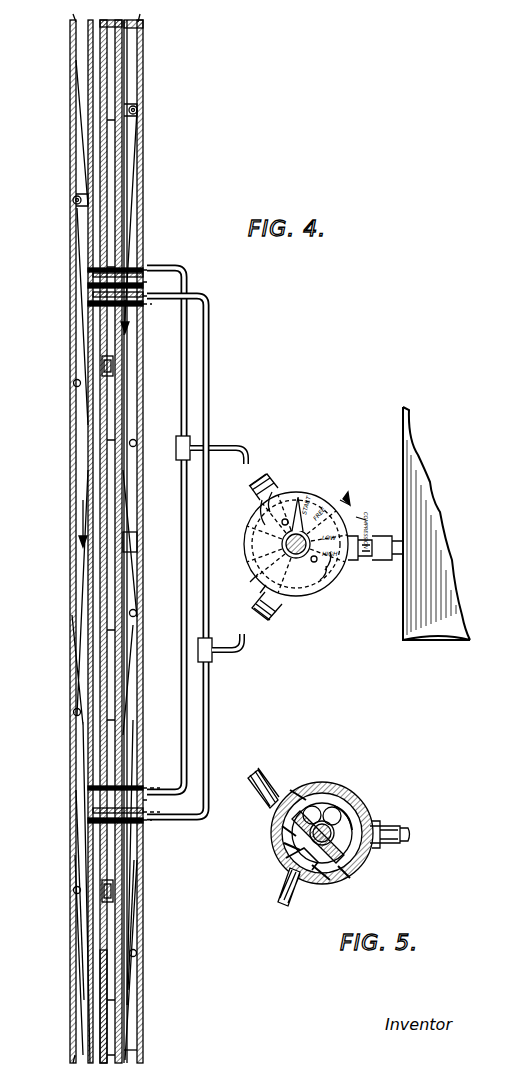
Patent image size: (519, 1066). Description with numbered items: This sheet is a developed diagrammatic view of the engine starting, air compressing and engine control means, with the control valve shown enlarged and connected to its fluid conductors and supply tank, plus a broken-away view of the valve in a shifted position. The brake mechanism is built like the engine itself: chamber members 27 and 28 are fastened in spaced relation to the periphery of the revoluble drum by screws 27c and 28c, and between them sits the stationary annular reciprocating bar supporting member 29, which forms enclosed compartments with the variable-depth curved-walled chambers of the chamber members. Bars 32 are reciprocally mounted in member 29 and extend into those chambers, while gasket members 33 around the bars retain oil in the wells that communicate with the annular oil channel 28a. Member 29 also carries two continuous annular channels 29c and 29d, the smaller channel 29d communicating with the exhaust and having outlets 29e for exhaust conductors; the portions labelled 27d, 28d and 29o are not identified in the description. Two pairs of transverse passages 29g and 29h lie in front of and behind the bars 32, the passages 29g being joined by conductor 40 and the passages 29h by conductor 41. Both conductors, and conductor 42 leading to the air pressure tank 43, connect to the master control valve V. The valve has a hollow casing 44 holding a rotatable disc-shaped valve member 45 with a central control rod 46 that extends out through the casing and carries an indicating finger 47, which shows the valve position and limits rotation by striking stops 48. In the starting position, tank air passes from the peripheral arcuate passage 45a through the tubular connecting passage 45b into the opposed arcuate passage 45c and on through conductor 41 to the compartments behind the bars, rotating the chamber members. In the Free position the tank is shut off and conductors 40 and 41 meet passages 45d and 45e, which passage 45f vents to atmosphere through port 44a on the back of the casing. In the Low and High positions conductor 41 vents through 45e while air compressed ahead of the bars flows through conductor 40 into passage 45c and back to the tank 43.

In FIG. 4, the chamber member 27 is at (72, 68).
In FIG. 4, the screw 27c is at (74, 200).
In FIG. 4, the casing wall section 27d is at (78, 858).
In FIG. 4, the chamber member 28 is at (143, 82).
In FIG. 4, the annular oil channel 28a is at (135, 957).
In FIG. 4, the screw 28c is at (138, 110).
In FIG. 4, the tubular member lower section 28d is at (132, 1044).
In FIG. 4, the reciprocating bar supporting member 29 is at (105, 60).
In FIG. 4, the continuous annular channel 29c is at (102, 1015).
In FIG. 4, the continuous annular channel 29d is at (112, 1030).
In FIG. 4, the outlet 29e is at (112, 365).
In FIG. 4, the transverse passage 29g is at (88, 270).
In FIG. 4, the transverse passage 29h is at (92, 305).
In FIG. 4, the piston packing 29o is at (118, 268).
In FIG. 4, the reciprocating bar 32 is at (92, 286).
In FIG. 4, the gasket member 33 is at (92, 297).
In FIG. 4, the conductor 40 is at (184, 382).
In FIG. 5, the conductor 40 is at (288, 770).
In FIG. 4, the conductor 41 is at (208, 408).
In FIG. 5, the conductor 41 is at (290, 893).
In FIG. 4, the conductor 42 is at (384, 558).
In FIG. 5, the conductor 42 is at (392, 845).
In FIG. 4, the air pressure tank 43 is at (403, 632).
In FIG. 5, the hollow casing 44 is at (328, 812).
In FIG. 5, the port 44a is at (345, 810).
In FIG. 5, the disc-shaped valve member 45 is at (352, 838).
In FIG. 4, the arcuate passage 45a is at (312, 515).
In FIG. 5, the arcuate passage 45a is at (344, 876).
In FIG. 4, the tubular connecting passage 45b is at (292, 566).
In FIG. 5, the tubular connecting passage 45b is at (320, 882).
In FIG. 4, the arcuate passage 45c is at (262, 568).
In FIG. 5, the arcuate passage 45c is at (284, 829).
In FIG. 4, the arcuate passage 45d is at (252, 503).
In FIG. 5, the arcuate passage 45d is at (360, 812).
In FIG. 4, the arcuate passage 45e is at (330, 566).
In FIG. 5, the arcuate passage 45e is at (286, 860).
In FIG. 5, the passage 45f is at (290, 802).
In FIG. 4, the control rod 46 is at (282, 545).
In FIG. 5, the control rod 46 is at (336, 830).
In FIG. 4, the indicating finger 47 is at (294, 530).
In FIG. 4, the stop 48 is at (282, 521).
In FIG. 4, the master control valve V is at (283, 504).